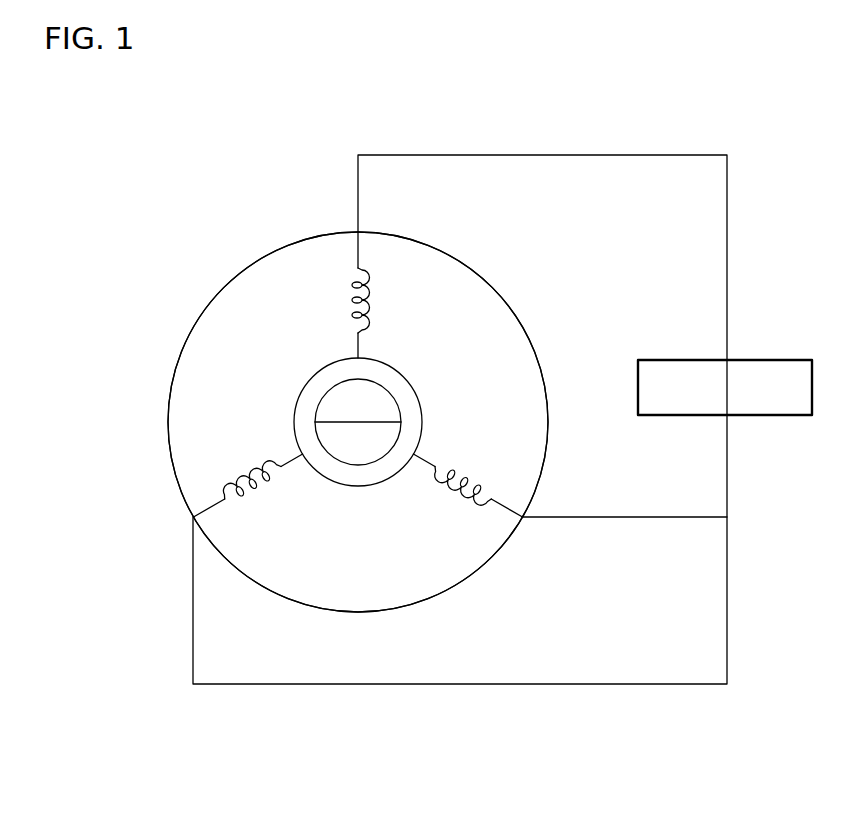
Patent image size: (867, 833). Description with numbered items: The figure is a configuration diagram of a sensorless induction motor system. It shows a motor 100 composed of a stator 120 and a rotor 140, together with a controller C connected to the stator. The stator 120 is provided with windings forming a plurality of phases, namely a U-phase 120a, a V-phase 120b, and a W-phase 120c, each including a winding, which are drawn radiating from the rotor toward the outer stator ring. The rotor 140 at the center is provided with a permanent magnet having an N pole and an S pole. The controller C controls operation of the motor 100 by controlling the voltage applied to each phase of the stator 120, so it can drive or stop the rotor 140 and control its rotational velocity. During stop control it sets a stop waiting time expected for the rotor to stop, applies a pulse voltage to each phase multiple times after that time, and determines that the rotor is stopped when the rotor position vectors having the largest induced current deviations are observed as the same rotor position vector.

The motor 100 is at (200, 309).
The stator 120 is at (276, 249).
The U-phase 120a is at (369, 291).
The V-phase 120b is at (240, 478).
The W-phase 120c is at (463, 503).
The rotor 140 is at (392, 393).
The controller C is at (780, 360).